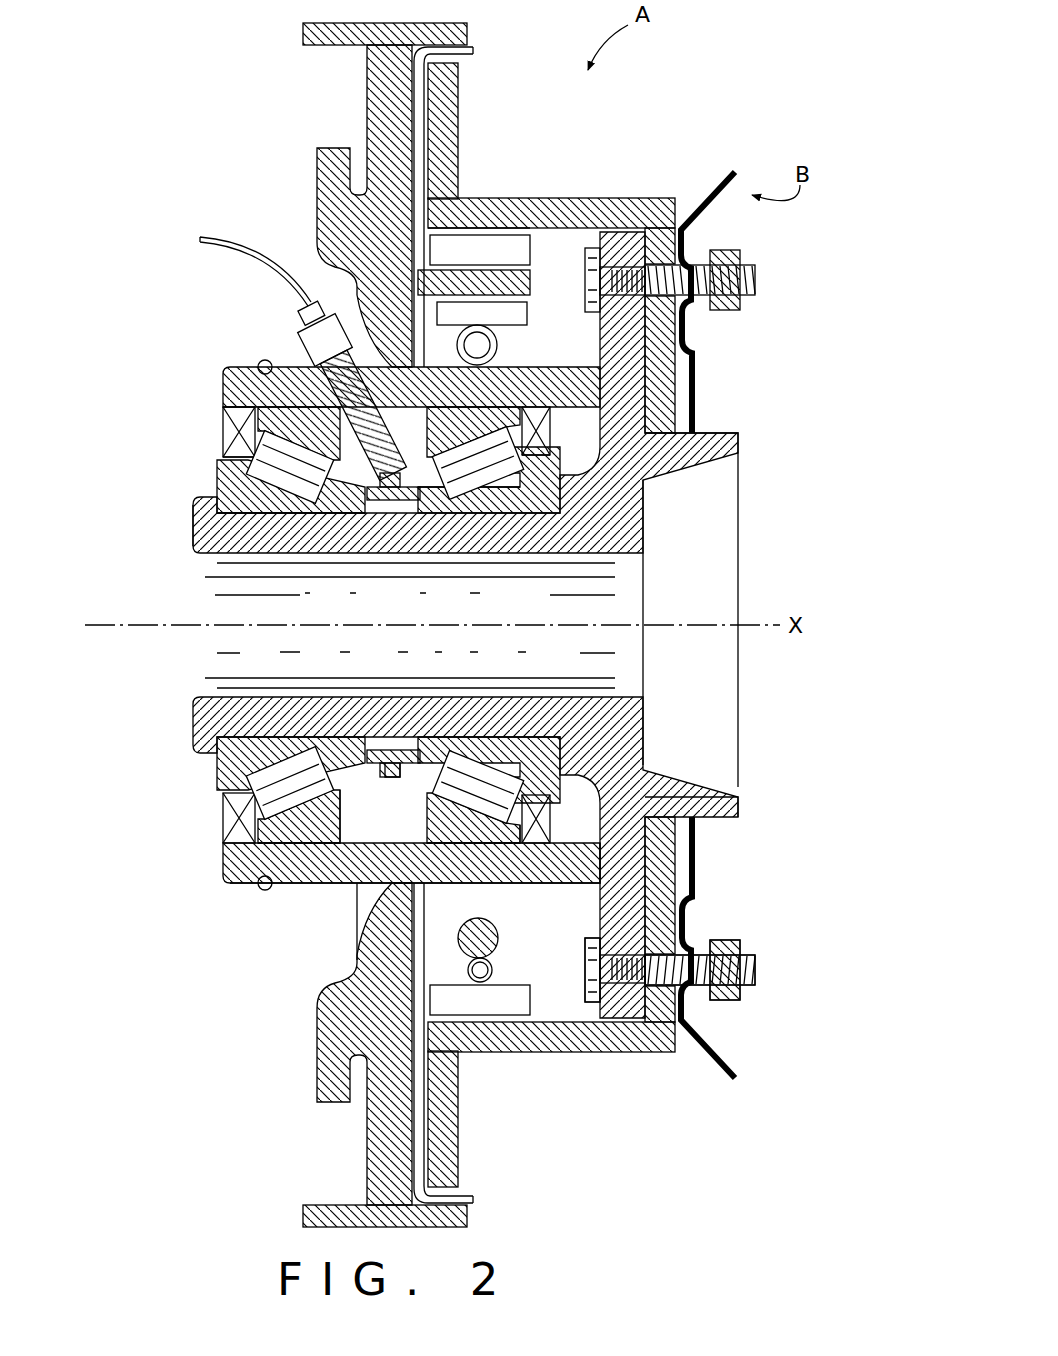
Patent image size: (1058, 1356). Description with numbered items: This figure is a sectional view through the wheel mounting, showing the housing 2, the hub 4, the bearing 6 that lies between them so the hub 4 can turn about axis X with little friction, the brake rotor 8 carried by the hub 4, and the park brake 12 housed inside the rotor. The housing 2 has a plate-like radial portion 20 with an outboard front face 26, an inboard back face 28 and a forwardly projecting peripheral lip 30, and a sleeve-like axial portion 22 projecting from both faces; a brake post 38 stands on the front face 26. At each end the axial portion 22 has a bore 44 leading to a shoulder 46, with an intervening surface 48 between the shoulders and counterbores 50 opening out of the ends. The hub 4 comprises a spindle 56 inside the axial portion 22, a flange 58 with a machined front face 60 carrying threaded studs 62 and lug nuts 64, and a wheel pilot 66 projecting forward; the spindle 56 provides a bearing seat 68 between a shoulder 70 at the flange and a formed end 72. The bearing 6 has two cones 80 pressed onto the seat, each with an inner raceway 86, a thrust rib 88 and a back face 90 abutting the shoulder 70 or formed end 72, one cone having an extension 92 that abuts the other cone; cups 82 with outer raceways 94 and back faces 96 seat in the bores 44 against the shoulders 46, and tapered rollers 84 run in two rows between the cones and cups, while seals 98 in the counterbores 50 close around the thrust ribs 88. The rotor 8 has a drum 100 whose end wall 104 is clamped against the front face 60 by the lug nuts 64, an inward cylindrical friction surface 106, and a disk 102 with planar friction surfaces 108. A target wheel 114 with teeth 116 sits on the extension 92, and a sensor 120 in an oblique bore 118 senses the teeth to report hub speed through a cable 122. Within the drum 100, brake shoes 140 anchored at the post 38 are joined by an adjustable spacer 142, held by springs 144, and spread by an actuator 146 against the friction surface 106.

The housing 2 is at (318, 1005).
The hub 4 is at (745, 540).
The bearing 6 is at (447, 735).
The brake rotor 8 is at (652, 200).
The park brake 12 is at (525, 232).
The radial portion 20 is at (375, 205).
The axial portion 22 is at (240, 885).
The front face 26 is at (420, 1135).
The back face 28 is at (372, 1130).
The lip 30 is at (450, 35).
The brake post 38 is at (522, 291).
The bore 44 is at (225, 432).
The shoulder 46 is at (260, 363).
The intervening surface 48 is at (445, 513).
The counterbore 50 is at (225, 412).
The spindle 56 is at (255, 548).
The flange 58 is at (660, 862).
The front face 60 is at (700, 890).
The threaded stud 62 is at (757, 966).
The lug nut 64 is at (728, 1000).
The wheel pilot 66 is at (740, 434).
The bearing seat 68 is at (328, 515).
The shoulder 70 is at (527, 513).
The formed end 72 is at (218, 500).
The cone 80 is at (512, 785).
The cup 82 is at (318, 882).
The tapered roller 84 is at (290, 770).
The inner raceway 86 is at (280, 745).
The thrust rib 88 is at (225, 822).
The back face 90 is at (245, 775).
The extension 92 is at (440, 760).
The outer raceway 94 is at (268, 890).
The back face 96 is at (360, 885).
The seal 98 is at (240, 458).
The drum 100 is at (603, 200).
The disk 102 is at (458, 120).
The end wall 104 is at (662, 345).
The cylindrical friction surface 106 is at (523, 1050).
The planar friction surface 108 is at (423, 95).
The target wheel 114 is at (375, 752).
The teeth 116 is at (398, 778).
The oblique bore 118 is at (382, 500).
The sensor 120 is at (375, 292).
The cable 122 is at (240, 262).
The brake shoe 140 is at (478, 235).
The adjustable spacer 142 is at (594, 985).
The spring 144 is at (500, 345).
The actuator 146 is at (525, 315).